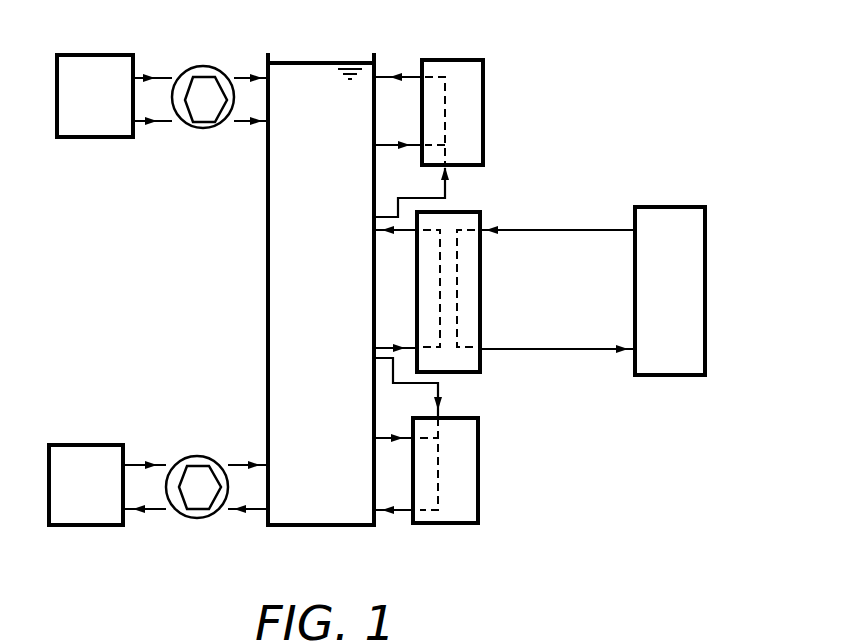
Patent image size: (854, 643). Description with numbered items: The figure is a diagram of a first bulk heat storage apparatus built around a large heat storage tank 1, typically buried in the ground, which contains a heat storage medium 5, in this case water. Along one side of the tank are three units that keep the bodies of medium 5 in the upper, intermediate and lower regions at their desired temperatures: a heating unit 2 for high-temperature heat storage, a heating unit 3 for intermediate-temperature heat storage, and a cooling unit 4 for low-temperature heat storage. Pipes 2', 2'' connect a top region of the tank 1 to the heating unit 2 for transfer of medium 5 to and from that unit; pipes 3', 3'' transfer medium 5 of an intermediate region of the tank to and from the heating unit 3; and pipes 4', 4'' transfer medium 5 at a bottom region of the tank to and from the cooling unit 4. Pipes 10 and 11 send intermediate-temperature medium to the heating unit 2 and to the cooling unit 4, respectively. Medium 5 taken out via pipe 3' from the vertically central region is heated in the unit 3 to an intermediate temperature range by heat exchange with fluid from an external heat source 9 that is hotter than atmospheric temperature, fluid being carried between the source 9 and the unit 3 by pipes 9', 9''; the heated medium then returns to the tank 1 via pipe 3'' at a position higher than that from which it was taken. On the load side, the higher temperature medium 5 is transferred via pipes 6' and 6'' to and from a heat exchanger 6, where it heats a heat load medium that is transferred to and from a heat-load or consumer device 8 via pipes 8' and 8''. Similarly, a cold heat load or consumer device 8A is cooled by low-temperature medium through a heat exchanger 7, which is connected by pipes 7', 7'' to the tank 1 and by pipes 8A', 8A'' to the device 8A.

The heat storage tank 1 is at (265, 307).
The heating unit 2 is at (481, 112).
The pipe 2' is at (398, 121).
The pipe 2'' is at (404, 45).
The heating unit 3 is at (464, 292).
The pipe 3' is at (395, 322).
The pipe 3'' is at (395, 254).
The cooling unit 4 is at (467, 470).
The pipe 4' is at (393, 459).
The pipe 4'' is at (390, 545).
The heat storage medium 5 is at (318, 82).
The heat exchanger 6 is at (199, 131).
The pipe 6' is at (249, 44).
The pipe 6'' is at (243, 157).
The heat exchanger 7 is at (197, 454).
The pipe 7' is at (242, 543).
The pipe 7'' is at (248, 429).
The heat-load or consumer device 8 is at (95, 126).
The pipe 8' is at (145, 157).
The pipe 8'' is at (154, 44).
The cold heat load or consumer device 8A is at (86, 457).
The pipe 8A' is at (144, 429).
The pipe 8A'' is at (147, 543).
The external heat source 9 is at (684, 278).
The pipe 9' is at (557, 257).
The pipe 9'' is at (557, 323).
The pipe 10 is at (452, 180).
The pipe 11 is at (445, 405).